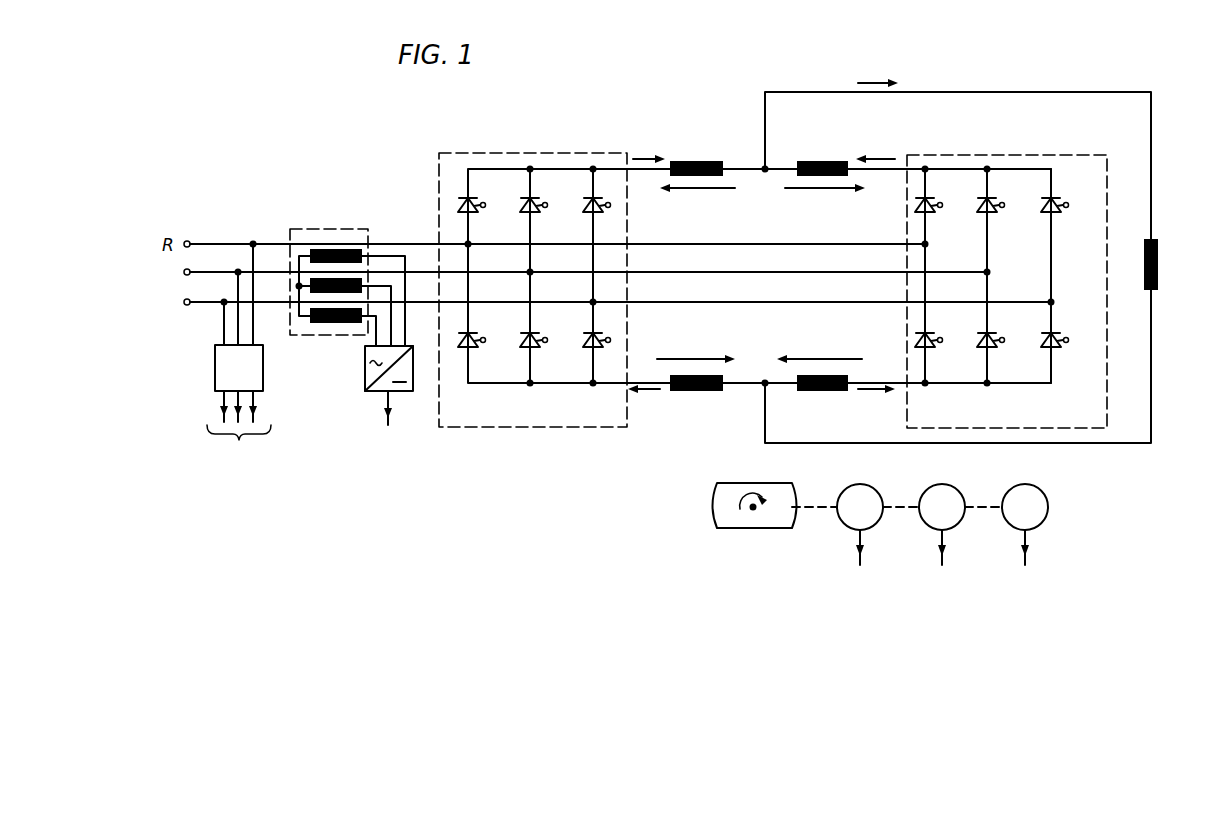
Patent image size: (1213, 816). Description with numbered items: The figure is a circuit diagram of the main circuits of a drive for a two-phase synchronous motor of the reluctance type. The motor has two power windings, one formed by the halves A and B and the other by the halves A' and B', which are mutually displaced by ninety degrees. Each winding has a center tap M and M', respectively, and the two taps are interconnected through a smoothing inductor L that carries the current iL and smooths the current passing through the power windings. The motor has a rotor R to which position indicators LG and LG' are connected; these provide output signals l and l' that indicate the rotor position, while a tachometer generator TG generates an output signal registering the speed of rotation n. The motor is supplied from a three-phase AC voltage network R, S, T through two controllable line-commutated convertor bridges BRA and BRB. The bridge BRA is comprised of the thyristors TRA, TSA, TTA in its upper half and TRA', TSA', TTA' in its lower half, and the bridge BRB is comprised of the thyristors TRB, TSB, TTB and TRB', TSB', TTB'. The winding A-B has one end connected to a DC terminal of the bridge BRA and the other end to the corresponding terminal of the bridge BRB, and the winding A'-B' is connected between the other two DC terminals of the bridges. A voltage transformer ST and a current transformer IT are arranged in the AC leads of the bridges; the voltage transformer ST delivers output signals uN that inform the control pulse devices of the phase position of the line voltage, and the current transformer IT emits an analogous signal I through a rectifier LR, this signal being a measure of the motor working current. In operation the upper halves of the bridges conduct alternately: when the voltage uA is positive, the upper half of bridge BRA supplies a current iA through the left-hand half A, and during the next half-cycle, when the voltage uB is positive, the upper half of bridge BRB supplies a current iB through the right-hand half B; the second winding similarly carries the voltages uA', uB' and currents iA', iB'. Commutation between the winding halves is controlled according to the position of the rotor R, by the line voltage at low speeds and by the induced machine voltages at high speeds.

The rotor R is at (725, 518).
The AC voltage network phase S is at (574, 273).
The AC voltage network phase T is at (606, 303).
The voltage transformer ST is at (263, 365).
The current transformer IT is at (330, 229).
The rectifier LR is at (413, 356).
The analogous signal I is at (393, 408).
The output signals uN is at (239, 428).
The controllable line-commutated convertor bridge BRA is at (554, 306).
The controllable line-commutated convertor bridge BRB is at (1019, 316).
The thyristor TRA is at (485, 218).
The thyristor TSA is at (547, 218).
The thyristor TTA is at (602, 224).
The thyristor TRA' is at (482, 326).
The thyristor TSA' is at (519, 352).
The thyristor TTA' is at (582, 352).
The thyristor TRB is at (940, 218).
The thyristor TSB is at (1001, 218).
The thyristor TTB is at (1065, 218).
The thyristor TRB' is at (943, 353).
The thyristor TSB' is at (1005, 353).
The thyristor TTB' is at (1069, 353).
The left-hand half of winding A-B A is at (696, 150).
The right-hand half of winding A- B is at (822, 150).
The half of winding A'-B' A' is at (696, 401).
The half of winding A'- B' is at (822, 401).
The center tap M is at (760, 187).
The center tap M' is at (760, 404).
The smoothing inductor L is at (1158, 265).
The inductor current iL is at (878, 72).
The current iA is at (649, 146).
The current iB is at (876, 146).
The current iA' is at (644, 403).
The current iB' is at (876, 403).
The voltage uA is at (696, 202).
The voltage uB is at (827, 202).
The voltage uA' is at (699, 345).
The voltage uB' is at (819, 345).
The position indicator LG is at (870, 490).
The position indicator LG' is at (948, 490).
The tachometer generator TG is at (1035, 487).
The output signal l is at (864, 547).
The output signal l' is at (948, 547).
The speed of rotation signal n is at (1032, 547).